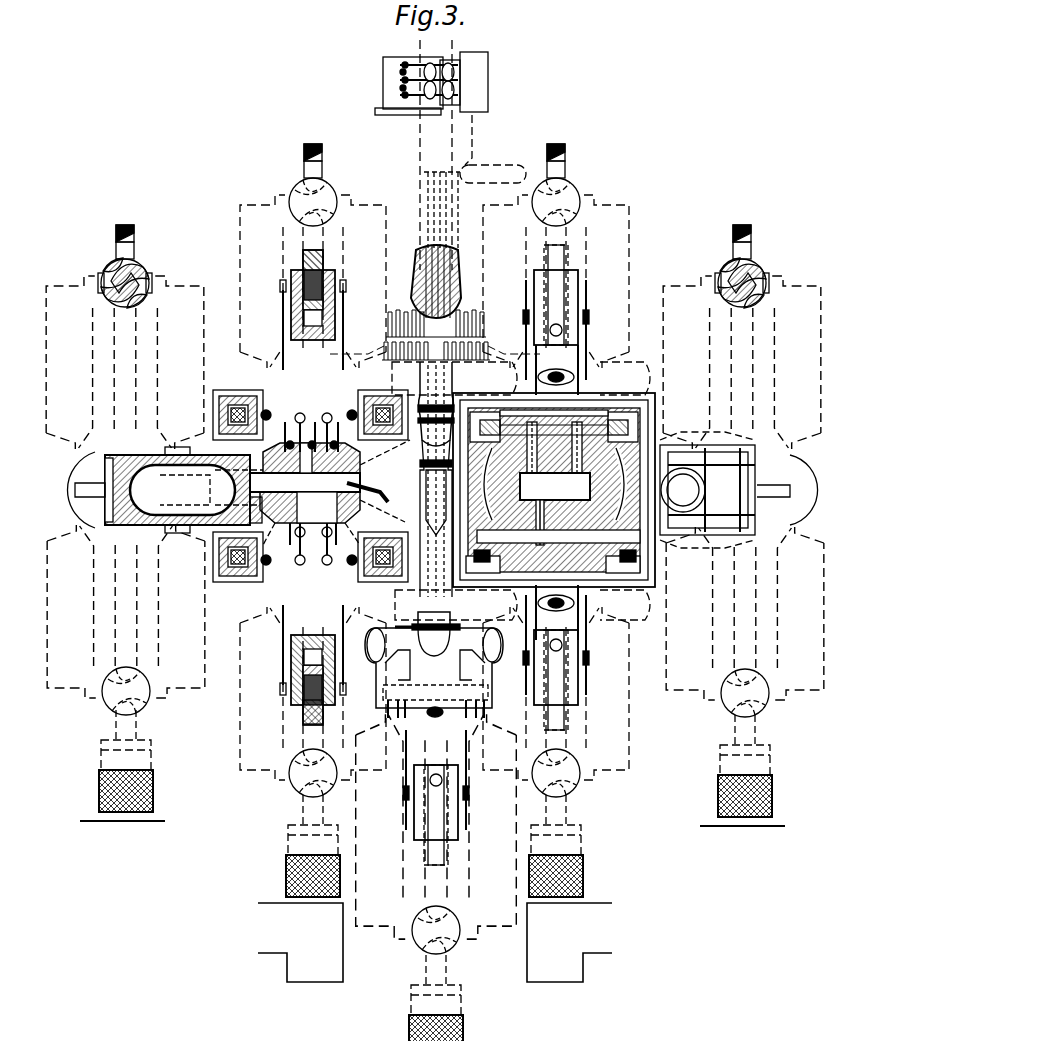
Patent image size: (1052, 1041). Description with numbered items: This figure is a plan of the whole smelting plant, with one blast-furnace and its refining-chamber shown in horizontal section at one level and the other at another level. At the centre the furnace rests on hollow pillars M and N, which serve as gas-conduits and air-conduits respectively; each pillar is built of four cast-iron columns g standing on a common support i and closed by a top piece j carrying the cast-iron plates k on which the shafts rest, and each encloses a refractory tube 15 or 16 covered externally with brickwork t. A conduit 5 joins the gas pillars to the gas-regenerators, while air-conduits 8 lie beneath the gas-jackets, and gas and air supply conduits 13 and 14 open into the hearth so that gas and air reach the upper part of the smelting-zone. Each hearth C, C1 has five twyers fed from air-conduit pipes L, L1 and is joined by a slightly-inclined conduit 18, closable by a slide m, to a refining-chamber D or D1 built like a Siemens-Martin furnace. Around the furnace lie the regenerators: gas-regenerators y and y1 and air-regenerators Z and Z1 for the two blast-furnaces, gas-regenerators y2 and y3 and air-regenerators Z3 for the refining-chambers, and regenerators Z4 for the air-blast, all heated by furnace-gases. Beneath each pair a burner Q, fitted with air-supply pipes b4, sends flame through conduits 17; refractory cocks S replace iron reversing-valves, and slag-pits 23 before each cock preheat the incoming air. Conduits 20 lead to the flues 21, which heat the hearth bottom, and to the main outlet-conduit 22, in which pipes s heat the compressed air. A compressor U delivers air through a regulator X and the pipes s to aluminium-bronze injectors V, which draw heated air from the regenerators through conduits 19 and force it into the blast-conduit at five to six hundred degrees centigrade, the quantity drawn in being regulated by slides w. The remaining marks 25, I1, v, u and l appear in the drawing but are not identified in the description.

The compressor U is at (442, 83).
The regulator X is at (492, 170).
The main outlet-conduit 22 is at (436, 155).
The pipes s is at (416, 252).
The cocks S is at (328, 195).
The gas-regenerators y is at (313, 281).
The gas-regenerators y1 is at (556, 281).
The gas-regenerators y2 is at (125, 362).
The gas-regenerators y3 is at (742, 362).
The air-regenerators Z is at (216, 652).
The air-regenerators Z1 is at (556, 693).
The air-regenerators Z3 is at (745, 613).
The regenerators for the air-blast Z4 is at (436, 826).
The slag-pits 23 is at (432, 875).
The burner Q is at (325, 280).
The air-supply pipes b4 is at (303, 256).
The rod 25 is at (496, 540).
The conduits 17 is at (385, 556).
The conduits 20 is at (434, 555).
The refining-chamber D is at (158, 490).
The flues 21 is at (371, 486).
The refining-chamber D1 is at (739, 482).
The piston I1 is at (741, 490).
The hollow pillars M is at (308, 400).
The hollow pillars N is at (308, 573).
The cast-iron columns g is at (219, 395).
The common support i is at (215, 420).
The brickwork t is at (245, 400).
The tube 15 is at (312, 411).
The tube 16 is at (433, 562).
The slide m is at (312, 487).
The hearth C is at (311, 482).
The slide w is at (313, 402).
The conduit 5 is at (313, 379).
The gas supply conduit 13 is at (313, 450).
The air supply conduit 14 is at (314, 523).
The slightly-inclined conduit 18 is at (240, 484).
The air-conduit pipe L is at (454, 491).
The air-conduit pipe L1 is at (489, 601).
The hearth C1 is at (554, 490).
The port v is at (619, 473).
The port u is at (516, 401).
The port l is at (551, 490).
The air-conduits 8 is at (555, 536).
The top piece j is at (627, 491).
The cast-iron plates k is at (645, 491).
The injectors V is at (434, 676).
The conduits 19 is at (431, 710).